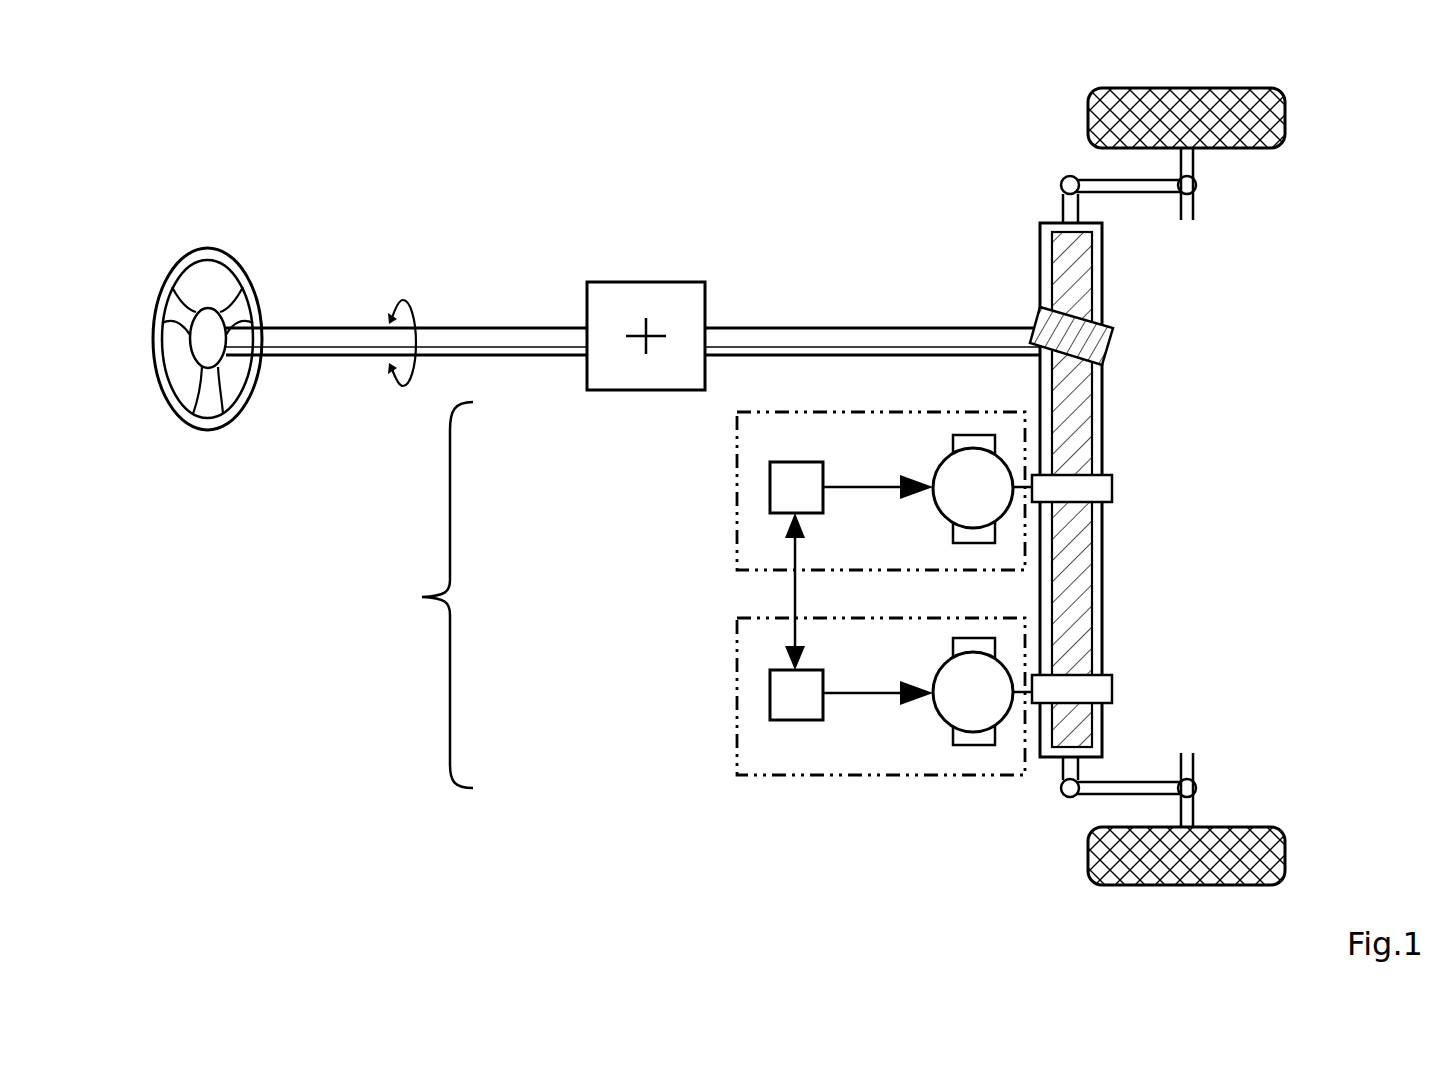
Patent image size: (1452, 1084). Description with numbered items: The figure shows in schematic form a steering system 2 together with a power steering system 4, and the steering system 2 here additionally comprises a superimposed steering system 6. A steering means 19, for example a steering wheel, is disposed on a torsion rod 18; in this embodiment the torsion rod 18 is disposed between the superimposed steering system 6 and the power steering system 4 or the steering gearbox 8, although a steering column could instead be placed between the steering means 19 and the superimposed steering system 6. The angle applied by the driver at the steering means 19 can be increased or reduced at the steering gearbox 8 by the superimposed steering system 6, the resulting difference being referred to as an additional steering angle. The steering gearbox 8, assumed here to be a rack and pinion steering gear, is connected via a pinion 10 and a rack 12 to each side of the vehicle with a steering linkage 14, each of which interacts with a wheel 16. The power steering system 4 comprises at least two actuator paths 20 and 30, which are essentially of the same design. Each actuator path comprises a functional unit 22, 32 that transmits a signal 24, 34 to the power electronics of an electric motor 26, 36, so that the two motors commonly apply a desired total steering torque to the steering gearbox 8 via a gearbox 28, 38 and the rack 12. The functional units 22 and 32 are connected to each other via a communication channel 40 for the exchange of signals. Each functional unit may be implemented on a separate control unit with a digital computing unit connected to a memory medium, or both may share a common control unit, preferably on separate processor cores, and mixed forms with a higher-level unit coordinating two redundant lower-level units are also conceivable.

The steering system 2 is at (416, 180).
The power steering system 4 is at (430, 595).
The superimposed steering system 6 is at (613, 303).
The steering gearbox 8 is at (966, 241).
The pinion 10 is at (1052, 323).
The rack 12 is at (1078, 295).
The steering linkage 14 is at (1092, 177).
The wheel 16 is at (1287, 113).
The torsion rod 18 is at (455, 337).
The steering means 19 is at (238, 262).
The actuator path 20 is at (737, 432).
The functional unit 22 is at (770, 478).
The signal 24 is at (872, 487).
The electric motor 26 is at (1003, 466).
The gearbox 28 is at (1112, 490).
The actuator path 30 is at (737, 645).
The functional unit 32 is at (770, 703).
The signal 34 is at (877, 695).
The electric motor 36 is at (970, 745).
The gearbox 38 is at (1112, 690).
The communication channel 40 is at (795, 597).